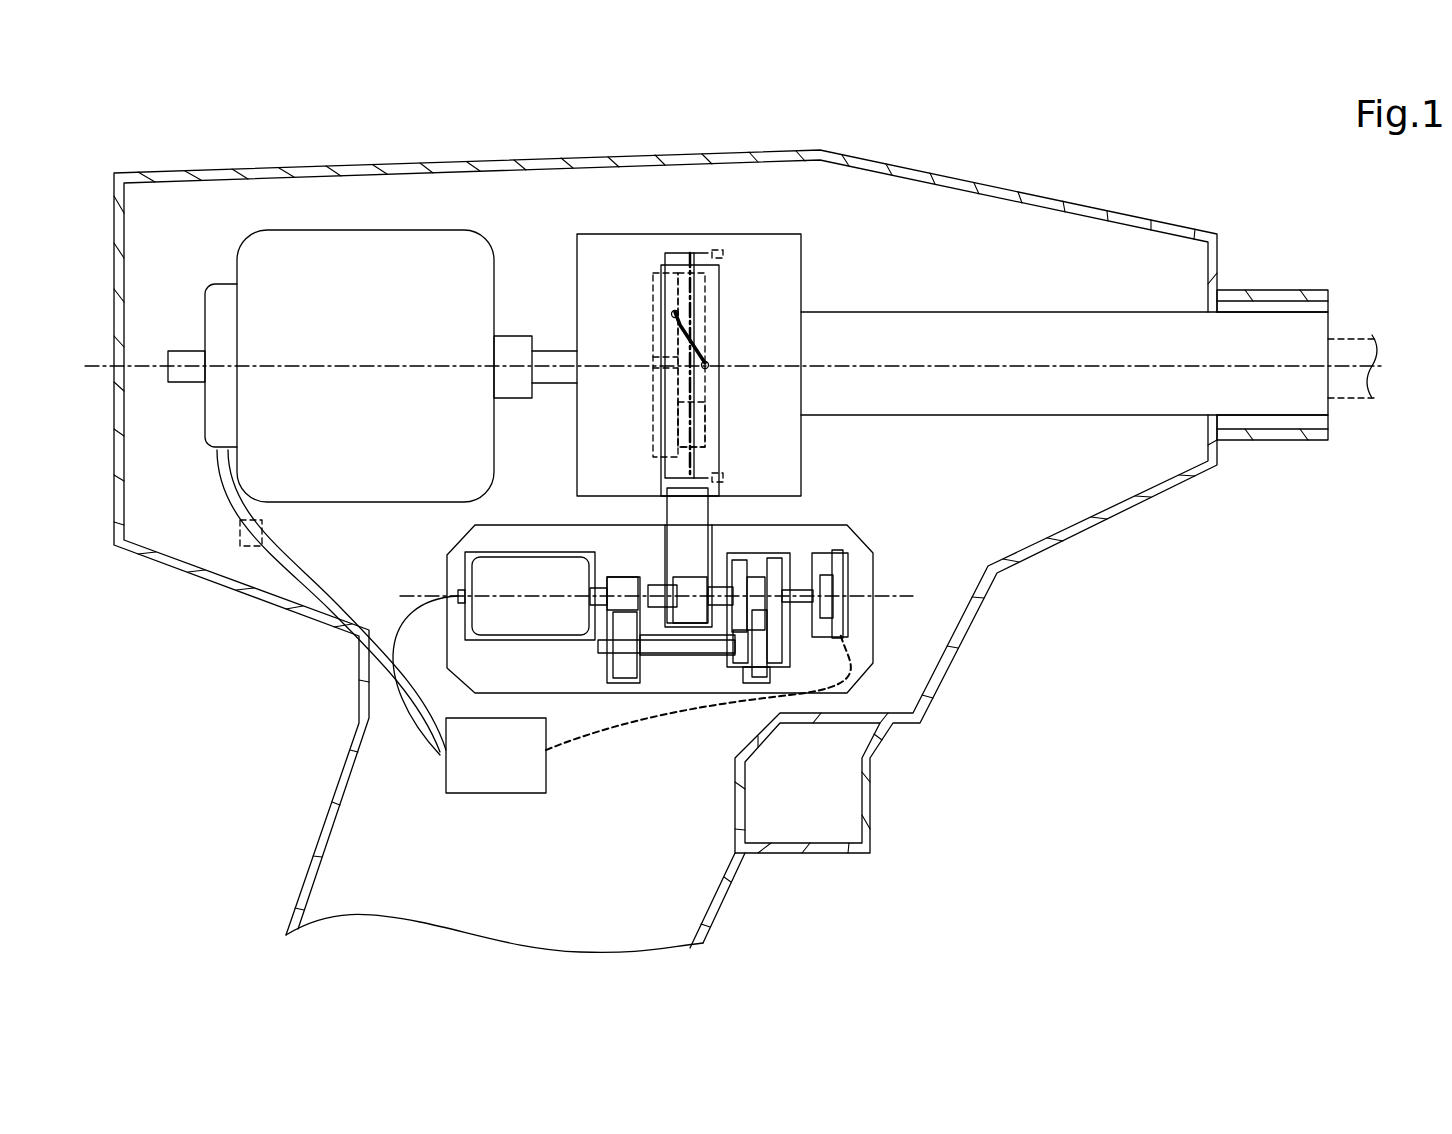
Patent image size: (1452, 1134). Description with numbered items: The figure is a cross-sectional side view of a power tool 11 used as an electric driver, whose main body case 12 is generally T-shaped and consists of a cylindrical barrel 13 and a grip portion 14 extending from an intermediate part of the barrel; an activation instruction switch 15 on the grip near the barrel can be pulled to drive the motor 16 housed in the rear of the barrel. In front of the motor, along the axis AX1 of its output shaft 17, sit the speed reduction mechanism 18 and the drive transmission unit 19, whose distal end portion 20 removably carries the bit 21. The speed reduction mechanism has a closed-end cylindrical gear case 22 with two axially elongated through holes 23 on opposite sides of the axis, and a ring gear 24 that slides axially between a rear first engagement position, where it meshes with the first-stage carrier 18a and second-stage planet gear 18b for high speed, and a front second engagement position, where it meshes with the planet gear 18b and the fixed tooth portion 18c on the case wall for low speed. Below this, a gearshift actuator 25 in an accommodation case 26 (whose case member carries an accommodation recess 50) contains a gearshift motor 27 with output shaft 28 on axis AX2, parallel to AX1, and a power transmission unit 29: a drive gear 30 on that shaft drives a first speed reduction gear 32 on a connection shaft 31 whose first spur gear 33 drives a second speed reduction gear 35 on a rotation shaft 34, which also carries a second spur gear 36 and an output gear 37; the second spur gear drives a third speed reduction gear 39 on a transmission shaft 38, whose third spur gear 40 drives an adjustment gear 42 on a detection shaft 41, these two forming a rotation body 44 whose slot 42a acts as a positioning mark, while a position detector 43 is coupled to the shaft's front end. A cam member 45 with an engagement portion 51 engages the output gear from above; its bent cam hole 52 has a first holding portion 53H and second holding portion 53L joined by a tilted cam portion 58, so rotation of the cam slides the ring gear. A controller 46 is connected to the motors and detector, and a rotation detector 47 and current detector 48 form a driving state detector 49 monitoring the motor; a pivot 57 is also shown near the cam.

The power tool 11 is at (1206, 141).
The main body case 12 is at (150, 172).
The barrel 13 is at (1110, 212).
The grip portion 14 is at (722, 912).
The activation instruction switch 15 is at (872, 800).
The motor 16 is at (258, 233).
The output shaft 17 is at (548, 345).
The speed reduction mechanism 18 is at (826, 445).
The first-stage carrier 18a is at (652, 425).
The second-stage planet gear 18b is at (655, 296).
The fixed tooth portion 18c is at (723, 254).
The drive transmission unit 19 is at (984, 312).
The distal end portion 20 is at (1278, 290).
The bit 21 is at (1348, 340).
The gear case 22 is at (600, 233).
The through holes 23 is at (653, 356).
The ring gear 24 is at (691, 255).
The gearshift actuator 25 is at (883, 510).
The accommodation case 26 is at (867, 678).
The gearshift motor 27 is at (480, 560).
The output shaft 28 is at (612, 590).
The power transmission unit 29 is at (664, 687).
The drive gear 30 is at (607, 613).
The connection shaft 31 is at (612, 650).
The first speed reduction gear 32 is at (625, 680).
The first spur gear 33 is at (733, 652).
The rotation shaft 34 is at (660, 585).
The second speed reduction gear 35 is at (738, 560).
The second spur gear 36 is at (757, 575).
The output gear 37 is at (688, 590).
The transmission shaft 38 is at (780, 680).
The third speed reduction gear 39 is at (745, 668).
The third spur gear 40 is at (770, 690).
The detection shaft 41 is at (848, 600).
The adjustment gear 42 is at (838, 553).
The slot 42a is at (780, 566).
The position detector 43 is at (832, 618).
The rotation body 44 is at (928, 530).
The cam member 45 is at (676, 252).
The controller 46 is at (490, 793).
The rotation detector 47 is at (205, 450).
The current detector 48 is at (232, 520).
The driving state detector 49 is at (175, 480).
The accommodation recess 50 is at (520, 553).
The engagement portion 51 is at (665, 530).
The cam hole 52 is at (712, 355).
The first holding portion 53H is at (670, 318).
The second holding portion 53L is at (710, 368).
The pivot (57A) 57 is at (712, 375).
The cam portion 58 is at (700, 330).
The axis AX1 is at (1080, 368).
The axis AX2 is at (885, 598).